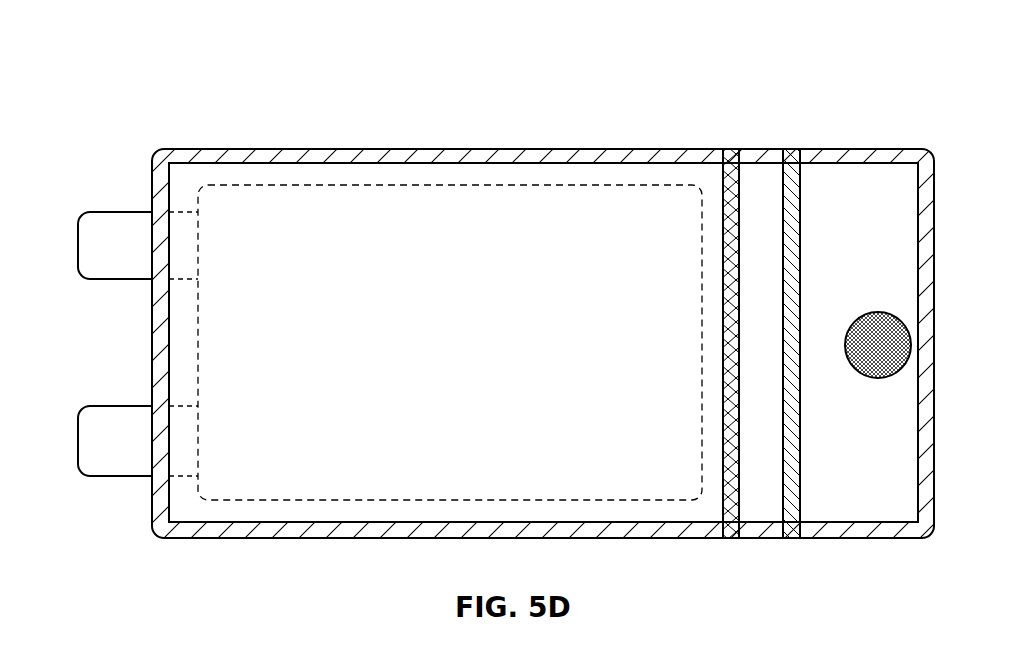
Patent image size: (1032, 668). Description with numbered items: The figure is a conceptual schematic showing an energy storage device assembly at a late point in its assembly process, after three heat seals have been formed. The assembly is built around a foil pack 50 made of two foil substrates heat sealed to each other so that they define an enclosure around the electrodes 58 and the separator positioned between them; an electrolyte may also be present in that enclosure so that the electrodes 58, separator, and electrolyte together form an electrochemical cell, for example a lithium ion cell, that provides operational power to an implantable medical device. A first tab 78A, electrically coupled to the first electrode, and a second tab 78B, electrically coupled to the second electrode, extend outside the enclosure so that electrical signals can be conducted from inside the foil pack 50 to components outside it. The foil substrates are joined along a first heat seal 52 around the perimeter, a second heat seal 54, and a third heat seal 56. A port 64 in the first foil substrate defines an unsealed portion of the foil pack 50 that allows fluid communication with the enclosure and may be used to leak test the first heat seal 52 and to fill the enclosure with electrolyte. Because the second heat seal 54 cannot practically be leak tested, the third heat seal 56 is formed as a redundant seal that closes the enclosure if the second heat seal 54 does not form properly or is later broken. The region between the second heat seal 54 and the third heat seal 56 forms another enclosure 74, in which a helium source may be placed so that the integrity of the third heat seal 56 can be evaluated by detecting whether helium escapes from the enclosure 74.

The foil pack 50 is at (498, 282).
The first heat seal 52 is at (488, 150).
The second heat seal 54 is at (723, 397).
The third heat seal 56 is at (792, 243).
The electrodes 58 is at (565, 221).
The port 64 is at (878, 325).
The enclosure 74 is at (757, 185).
The first tab 78A is at (97, 229).
The second tab 78B is at (91, 425).